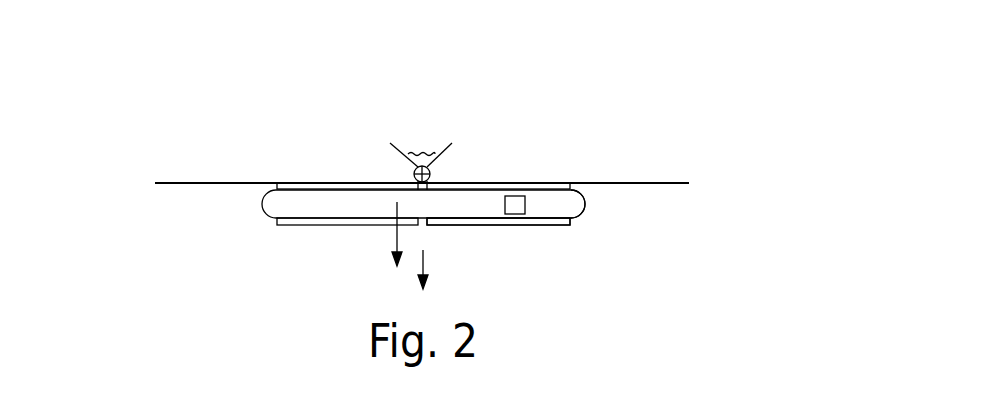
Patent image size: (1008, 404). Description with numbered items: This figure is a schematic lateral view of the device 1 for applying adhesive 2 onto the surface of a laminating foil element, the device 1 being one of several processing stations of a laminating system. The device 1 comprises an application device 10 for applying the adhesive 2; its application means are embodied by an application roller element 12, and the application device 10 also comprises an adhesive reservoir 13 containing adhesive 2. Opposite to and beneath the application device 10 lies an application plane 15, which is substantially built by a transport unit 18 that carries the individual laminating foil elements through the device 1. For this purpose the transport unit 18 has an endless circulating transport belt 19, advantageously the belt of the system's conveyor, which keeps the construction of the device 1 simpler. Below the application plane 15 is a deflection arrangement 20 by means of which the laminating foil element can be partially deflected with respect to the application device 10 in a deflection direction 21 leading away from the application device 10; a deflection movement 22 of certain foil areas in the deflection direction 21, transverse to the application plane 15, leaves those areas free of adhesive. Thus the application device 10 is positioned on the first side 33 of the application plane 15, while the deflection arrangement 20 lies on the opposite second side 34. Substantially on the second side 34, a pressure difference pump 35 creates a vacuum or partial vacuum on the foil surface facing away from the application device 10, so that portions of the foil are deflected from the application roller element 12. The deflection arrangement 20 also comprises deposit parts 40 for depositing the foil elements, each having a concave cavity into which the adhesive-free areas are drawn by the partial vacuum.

The device 1 is at (603, 80).
The adhesive 2 is at (420, 157).
The application device 10 is at (443, 120).
The application roller element 12 is at (432, 178).
The adhesive reservoir 13 is at (374, 153).
The application plane 15 is at (647, 181).
The transport unit 18 is at (178, 200).
The transport belt 19 is at (587, 203).
The deflection arrangement 20 is at (268, 203).
The deflection direction 21 is at (423, 268).
The deflection movement 22 is at (397, 232).
The first side 33 is at (571, 125).
The second side 34 is at (550, 287).
The pressure difference pump 35 is at (513, 205).
The deposit parts 40 is at (540, 225).